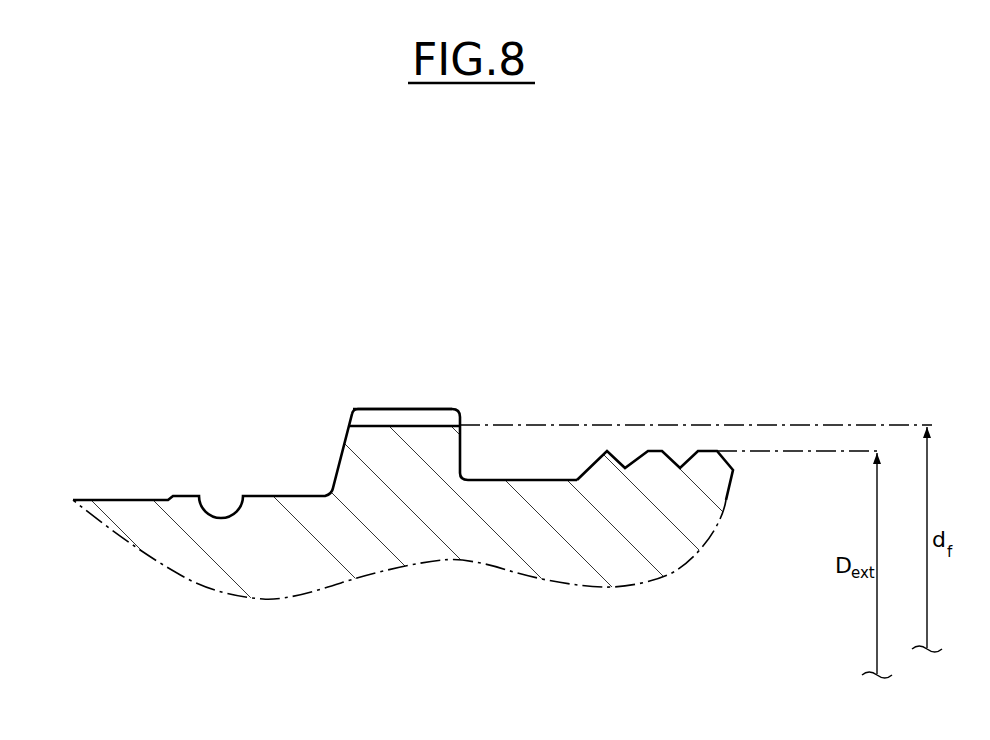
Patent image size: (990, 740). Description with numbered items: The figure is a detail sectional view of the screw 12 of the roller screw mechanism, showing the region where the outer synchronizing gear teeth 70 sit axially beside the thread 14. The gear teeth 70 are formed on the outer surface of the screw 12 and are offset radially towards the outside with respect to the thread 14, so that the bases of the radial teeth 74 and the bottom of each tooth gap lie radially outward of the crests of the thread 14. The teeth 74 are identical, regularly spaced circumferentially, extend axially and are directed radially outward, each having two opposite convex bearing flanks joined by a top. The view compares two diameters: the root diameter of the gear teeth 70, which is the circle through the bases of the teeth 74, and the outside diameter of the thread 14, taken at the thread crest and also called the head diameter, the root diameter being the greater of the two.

The screw 12 is at (468, 548).
The thread 14 is at (629, 473).
The outer synchronizing gear teeth 70 is at (416, 382).
The radial teeth 74 is at (383, 439).